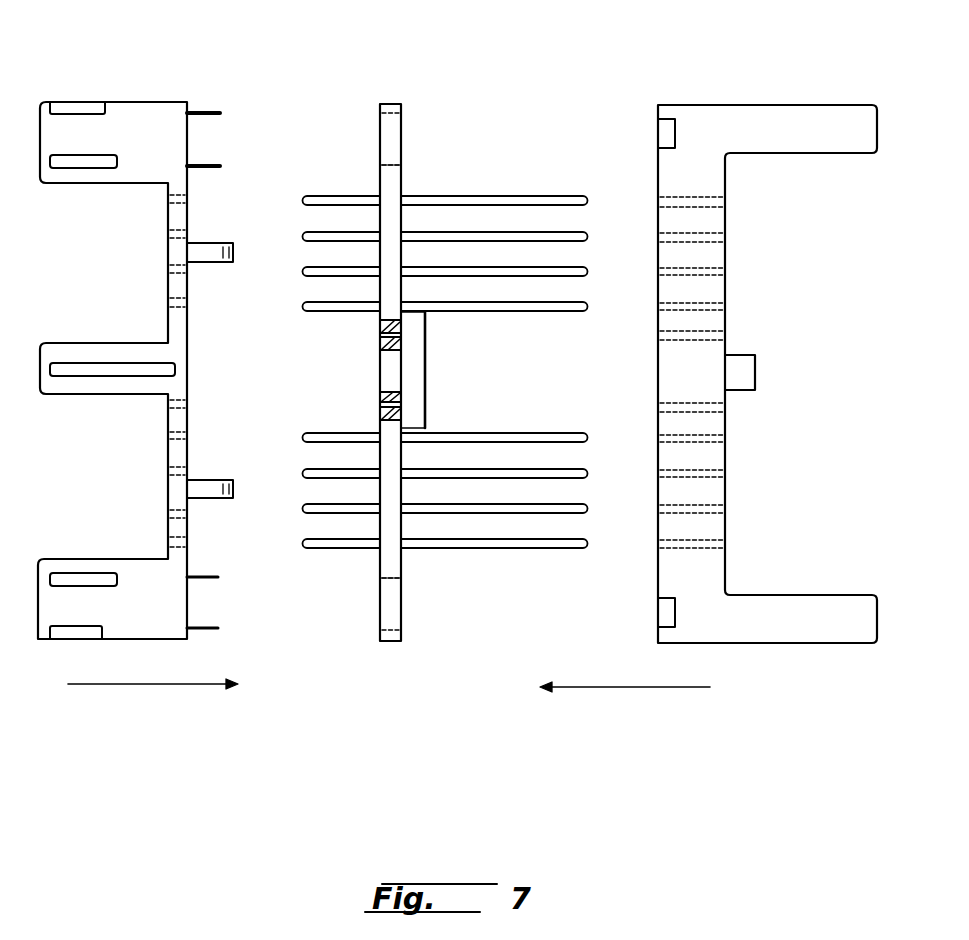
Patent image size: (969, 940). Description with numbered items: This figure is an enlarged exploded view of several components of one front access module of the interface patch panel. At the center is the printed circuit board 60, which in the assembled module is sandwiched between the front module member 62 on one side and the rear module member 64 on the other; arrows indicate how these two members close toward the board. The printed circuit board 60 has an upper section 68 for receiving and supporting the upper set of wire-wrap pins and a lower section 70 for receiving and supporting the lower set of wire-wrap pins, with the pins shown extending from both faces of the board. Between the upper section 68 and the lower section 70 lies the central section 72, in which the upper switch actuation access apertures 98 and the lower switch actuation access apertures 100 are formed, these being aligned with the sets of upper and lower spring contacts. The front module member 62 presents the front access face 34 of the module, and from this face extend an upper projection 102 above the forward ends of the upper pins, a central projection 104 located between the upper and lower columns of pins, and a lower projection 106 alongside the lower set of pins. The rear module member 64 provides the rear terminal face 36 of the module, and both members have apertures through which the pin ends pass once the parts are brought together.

The front access face 34 is at (170, 288).
The rear terminal face 36 is at (725, 456).
The printed circuit board 60 is at (392, 600).
The front module member 62 is at (147, 628).
The rear module member 64 is at (742, 635).
The upper section 68 is at (392, 137).
The lower section 70 is at (392, 620).
The central section 72 is at (388, 375).
The upper switch actuation access apertures 98 is at (382, 331).
The lower switch actuation access apertures 100 is at (384, 405).
The upper projection 102 is at (44, 110).
The central projection 104 is at (60, 350).
The lower projection 106 is at (60, 607).